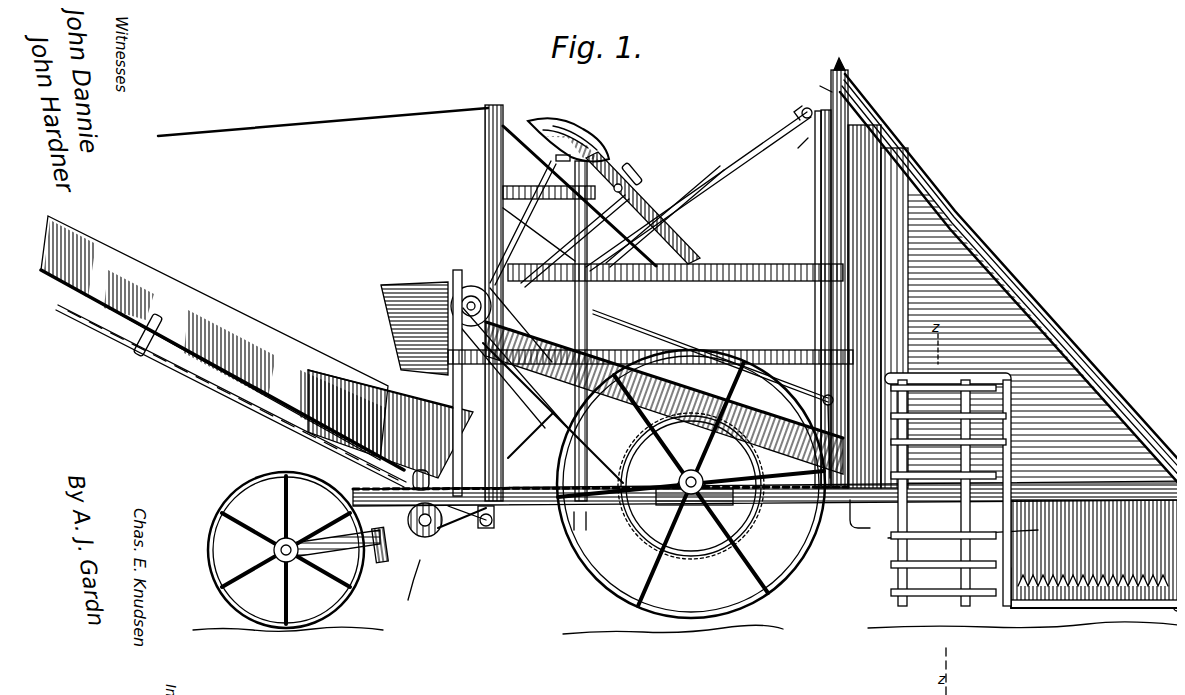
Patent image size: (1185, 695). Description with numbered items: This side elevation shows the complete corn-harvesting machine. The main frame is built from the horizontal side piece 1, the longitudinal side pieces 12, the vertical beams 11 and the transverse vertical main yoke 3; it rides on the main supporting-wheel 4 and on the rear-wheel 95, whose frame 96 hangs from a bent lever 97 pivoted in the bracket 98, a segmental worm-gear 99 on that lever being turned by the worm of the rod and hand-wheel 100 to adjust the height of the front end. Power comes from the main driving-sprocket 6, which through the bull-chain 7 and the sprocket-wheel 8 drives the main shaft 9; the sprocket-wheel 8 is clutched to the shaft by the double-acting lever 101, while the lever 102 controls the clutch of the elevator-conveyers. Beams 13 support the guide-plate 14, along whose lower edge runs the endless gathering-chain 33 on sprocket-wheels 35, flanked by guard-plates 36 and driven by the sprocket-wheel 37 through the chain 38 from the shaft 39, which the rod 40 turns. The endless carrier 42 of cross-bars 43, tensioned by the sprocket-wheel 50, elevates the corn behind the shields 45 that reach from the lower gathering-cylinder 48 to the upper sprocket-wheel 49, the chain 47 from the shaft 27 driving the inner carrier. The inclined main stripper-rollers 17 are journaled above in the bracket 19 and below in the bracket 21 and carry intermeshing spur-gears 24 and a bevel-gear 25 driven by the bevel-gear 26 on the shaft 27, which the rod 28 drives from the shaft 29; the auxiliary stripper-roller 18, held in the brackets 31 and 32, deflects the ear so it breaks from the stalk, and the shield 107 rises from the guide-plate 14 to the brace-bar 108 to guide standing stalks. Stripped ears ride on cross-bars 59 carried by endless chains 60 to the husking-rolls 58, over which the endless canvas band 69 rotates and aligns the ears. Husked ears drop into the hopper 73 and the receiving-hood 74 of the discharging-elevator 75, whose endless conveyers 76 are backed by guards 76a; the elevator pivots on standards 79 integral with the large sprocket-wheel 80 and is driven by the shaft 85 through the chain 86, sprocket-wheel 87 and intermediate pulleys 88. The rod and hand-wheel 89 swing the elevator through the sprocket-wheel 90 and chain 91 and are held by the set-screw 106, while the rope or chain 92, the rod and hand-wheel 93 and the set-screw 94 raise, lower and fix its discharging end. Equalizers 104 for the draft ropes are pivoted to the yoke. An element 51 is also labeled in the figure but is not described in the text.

The horizontal side piece 1 is at (765, 493).
The transverse vertical main yoke 3 is at (818, 81).
The main supporting-wheel 4 is at (738, 524).
The main driving-sprocket 6 is at (691, 484).
The bull-chain 7 is at (530, 435).
The sprocket-wheel 8 is at (462, 278).
The main shaft 9 is at (505, 358).
The vertical beam 11 is at (467, 383).
The longitudinal side piece 12 is at (327, 533).
The beam 13 is at (1121, 493).
The guide-plate 14 is at (1114, 416).
The main stripper-roller 17 is at (673, 261).
The auxiliary stripper-roller 18 is at (890, 292).
The bracket 19 is at (888, 118).
The bracket 21 is at (870, 520).
The intermeshing spur-gears 24 is at (876, 104).
The bevel-gear 25 is at (868, 86).
The bevel-gear 26 is at (856, 76).
The shaft 27 is at (800, 100).
The rod 28 is at (699, 189).
The shaft 29 is at (573, 205).
The bracket 31 is at (898, 126).
The adjustable bracket 32 is at (900, 365).
The endless gathering-chain 33 is at (1090, 602).
The sprocket-wheel 35 is at (1012, 602).
The guard-plate 36 is at (1150, 602).
The sprocket-wheel 37 is at (966, 604).
The chain 38 is at (971, 528).
The shaft 39 is at (935, 382).
The rod 40 is at (640, 326).
The endless carrier 42 is at (882, 565).
The cross-bar 43 is at (880, 548).
The shield 45 is at (995, 388).
The chain 47 is at (814, 372).
The lower gathering-cylinder 48 is at (904, 600).
The upper sprocket-wheel 49 is at (975, 382).
The sprocket-wheel 50 is at (935, 527).
The tine 51 is at (935, 459).
The husking-rolls 58 is at (515, 368).
The cross-bar 59 is at (682, 486).
The endless chain 60 is at (565, 392).
The endless canvas band 69 is at (745, 408).
The hopper 73 is at (414, 328).
The receiving-hood 74 is at (390, 424).
The discharging-elevator 75 is at (222, 343).
The endless conveyer 76 is at (200, 378).
The guard 76a is at (80, 306).
The standard 79 is at (434, 478).
The large sprocket-wheel 80 is at (593, 491).
The shaft 85 is at (418, 530).
The chain 86 is at (445, 380).
The sprocket-wheel 87 is at (410, 589).
The intermediate pulleys 88 is at (470, 520).
The rod and hand-wheel 89 is at (598, 140).
The sprocket-wheel 90 is at (618, 460).
The chain 91 is at (650, 417).
The rope or chain 92 is at (372, 110).
The rod and hand-wheel 93 is at (636, 176).
The set-screw 94 is at (636, 180).
The rear-wheel 95 is at (350, 576).
The frame 96 is at (372, 548).
The bent lever 97 is at (440, 528).
The bracket 98 is at (485, 522).
The segmental worm-gear 99 is at (570, 525).
The rod and hand-wheel 100 is at (590, 156).
The double-acting lever 101 is at (676, 168).
The lever 102 is at (476, 224).
The equalizers 104 is at (880, 66).
The set-screw 106 is at (590, 190).
The shield 107 is at (1042, 339).
The brace-bar 108 is at (1022, 290).